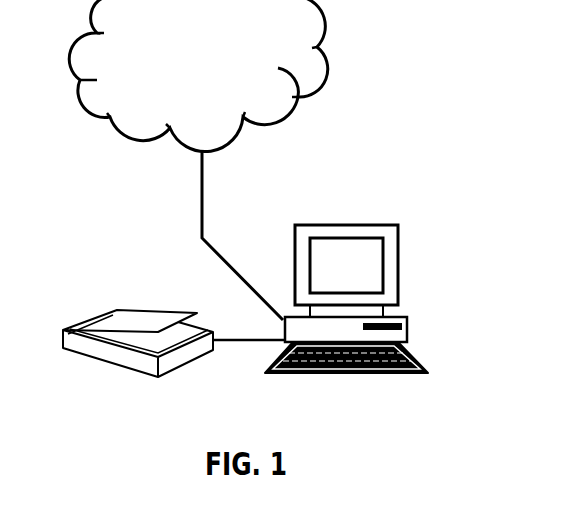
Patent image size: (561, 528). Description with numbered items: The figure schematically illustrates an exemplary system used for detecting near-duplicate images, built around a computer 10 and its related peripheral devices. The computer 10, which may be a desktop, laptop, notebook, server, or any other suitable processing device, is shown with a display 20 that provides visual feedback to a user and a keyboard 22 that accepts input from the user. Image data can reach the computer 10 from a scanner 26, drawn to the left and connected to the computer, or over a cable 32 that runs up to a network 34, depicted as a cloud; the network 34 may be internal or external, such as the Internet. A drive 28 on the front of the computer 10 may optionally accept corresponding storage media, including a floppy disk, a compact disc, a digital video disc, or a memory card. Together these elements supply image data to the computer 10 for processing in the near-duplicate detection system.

The network 34 is at (185, 69).
The cable 32 is at (202, 220).
The display 20 is at (398, 250).
The drive 28 is at (388, 323).
The computer 10 is at (410, 329).
The keyboard 22 is at (422, 367).
The scanner 26 is at (63, 328).